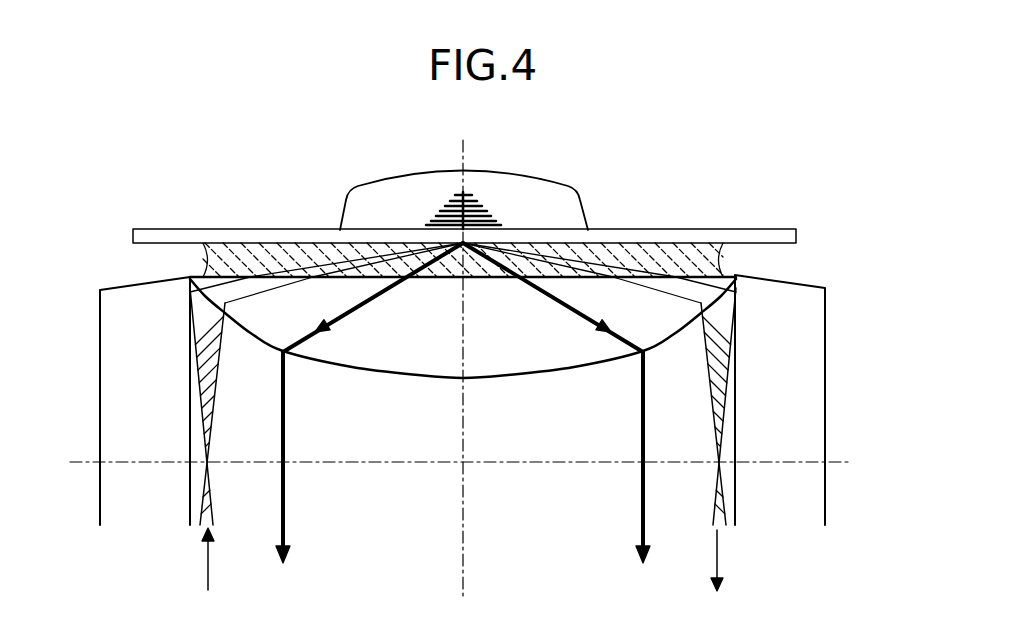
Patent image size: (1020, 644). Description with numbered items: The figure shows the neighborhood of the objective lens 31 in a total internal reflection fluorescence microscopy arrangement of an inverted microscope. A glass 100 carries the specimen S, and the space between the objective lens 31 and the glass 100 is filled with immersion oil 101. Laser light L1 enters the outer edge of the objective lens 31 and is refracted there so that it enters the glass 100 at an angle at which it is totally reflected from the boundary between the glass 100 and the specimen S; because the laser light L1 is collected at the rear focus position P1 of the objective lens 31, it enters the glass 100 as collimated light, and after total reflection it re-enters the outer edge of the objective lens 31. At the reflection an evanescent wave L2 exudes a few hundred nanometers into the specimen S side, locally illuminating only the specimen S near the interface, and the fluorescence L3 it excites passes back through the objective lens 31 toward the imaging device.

The glass 100 is at (747, 228).
The immersion oil 101 is at (720, 257).
The objective lens 31 is at (507, 365).
The specimen S is at (521, 185).
The laser light L1 is at (205, 357).
The evanescent wave L2 is at (456, 210).
The fluorescence L3 is at (285, 491).
The rear focus position P1 is at (835, 462).